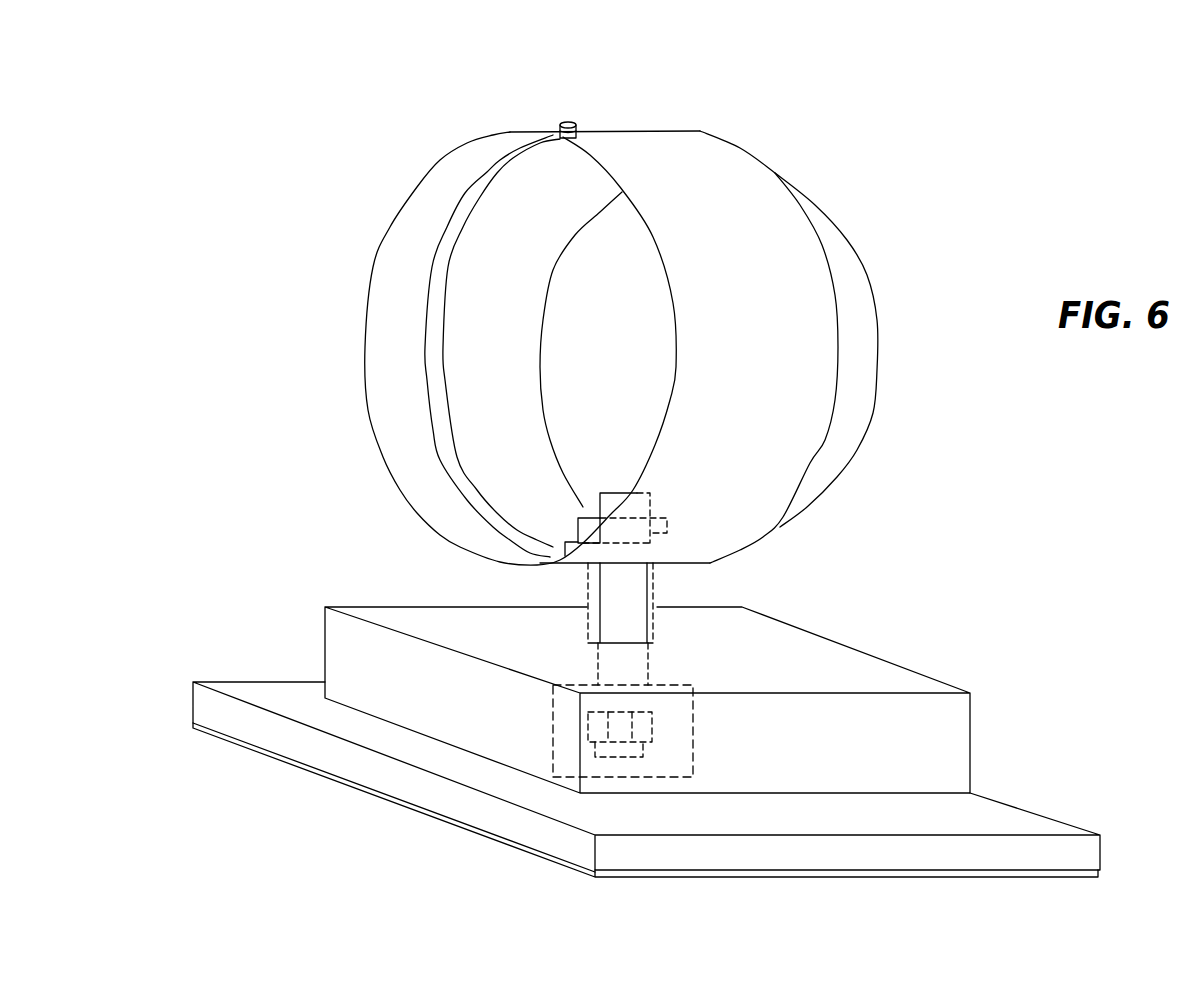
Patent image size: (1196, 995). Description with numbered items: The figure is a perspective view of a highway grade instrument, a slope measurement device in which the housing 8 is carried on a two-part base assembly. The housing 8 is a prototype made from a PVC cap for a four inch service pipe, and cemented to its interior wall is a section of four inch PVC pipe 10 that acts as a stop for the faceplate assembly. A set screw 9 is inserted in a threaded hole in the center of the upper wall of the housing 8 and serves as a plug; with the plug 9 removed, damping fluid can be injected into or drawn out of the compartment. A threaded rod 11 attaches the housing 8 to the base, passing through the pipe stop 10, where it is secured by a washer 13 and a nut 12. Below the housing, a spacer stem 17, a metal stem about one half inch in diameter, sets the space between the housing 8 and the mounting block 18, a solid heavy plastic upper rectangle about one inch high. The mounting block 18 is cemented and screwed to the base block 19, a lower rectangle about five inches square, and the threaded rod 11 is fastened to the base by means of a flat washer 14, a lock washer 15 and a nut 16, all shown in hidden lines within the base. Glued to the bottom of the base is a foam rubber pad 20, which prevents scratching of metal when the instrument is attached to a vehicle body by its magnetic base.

The housing 8 is at (733, 198).
The set screw 9 is at (583, 129).
The PVC pipe section 10 is at (527, 200).
The threaded rod 11 is at (598, 503).
The nut 12 is at (573, 527).
The washer 13 is at (555, 546).
The flat washer 14 is at (653, 700).
The lock washer 15 is at (652, 712).
The nut 16 is at (645, 730).
The spacer stem 17 is at (600, 583).
The mounting block 18 is at (347, 630).
The base block 19 is at (530, 790).
The rubber pad 20 is at (473, 835).